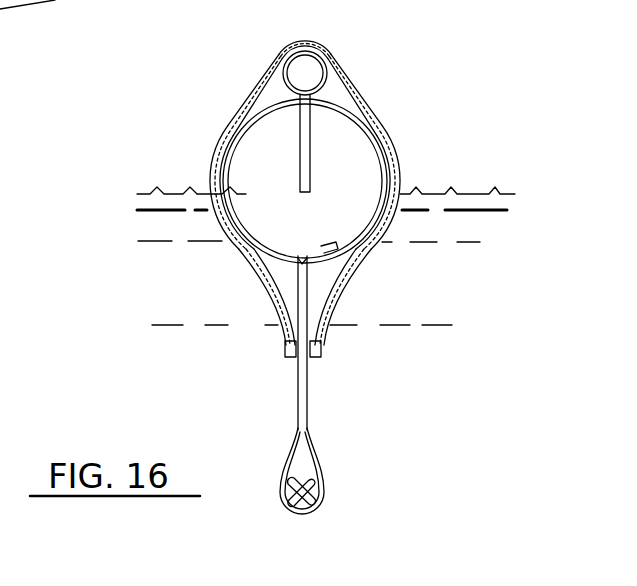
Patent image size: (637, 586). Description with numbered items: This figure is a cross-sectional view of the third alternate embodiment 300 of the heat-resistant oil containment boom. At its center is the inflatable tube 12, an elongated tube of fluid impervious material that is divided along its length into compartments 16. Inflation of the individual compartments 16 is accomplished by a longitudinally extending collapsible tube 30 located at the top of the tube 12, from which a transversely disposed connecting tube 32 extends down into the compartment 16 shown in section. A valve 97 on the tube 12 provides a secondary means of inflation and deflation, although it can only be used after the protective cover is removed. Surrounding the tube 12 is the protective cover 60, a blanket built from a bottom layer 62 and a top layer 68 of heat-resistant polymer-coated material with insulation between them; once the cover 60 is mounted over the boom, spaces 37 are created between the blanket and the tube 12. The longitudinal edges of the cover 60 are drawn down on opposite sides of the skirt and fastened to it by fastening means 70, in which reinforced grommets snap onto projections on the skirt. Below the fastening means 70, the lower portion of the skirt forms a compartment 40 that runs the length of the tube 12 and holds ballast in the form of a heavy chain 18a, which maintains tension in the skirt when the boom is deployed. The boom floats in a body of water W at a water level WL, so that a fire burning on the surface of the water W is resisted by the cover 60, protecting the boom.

The third alternate embodiment 300 is at (339, 59).
The bottom layer 62 is at (273, 87).
The collapsible tube 30 is at (342, 84).
The spaces 37 is at (357, 98).
The top layer 68 is at (380, 120).
The protective cover 60 is at (210, 153).
The compartments 16 is at (284, 166).
The connecting tubes 32 is at (312, 172).
The inflatable tube 12 is at (230, 196).
The valve 97 is at (350, 226).
The fastening means 70 is at (322, 352).
The compartment 40 is at (311, 455).
The heavy chain 18a is at (322, 495).
The body of water W is at (496, 194).
The water level WL is at (347, 195).